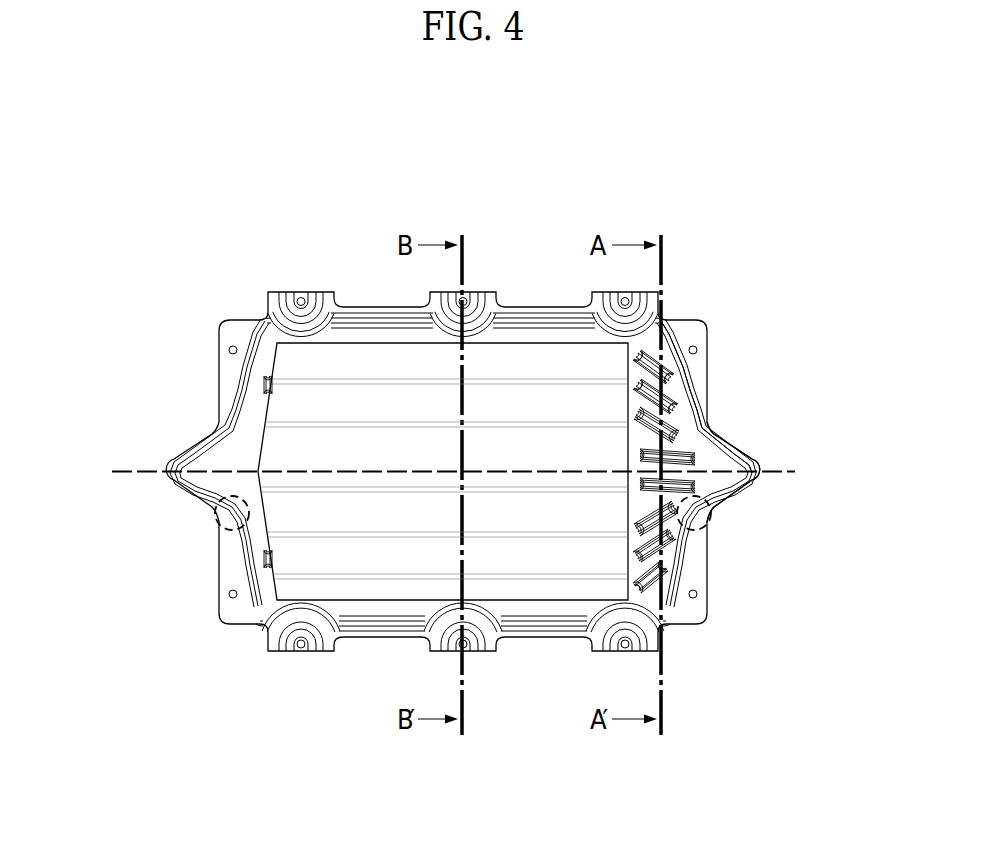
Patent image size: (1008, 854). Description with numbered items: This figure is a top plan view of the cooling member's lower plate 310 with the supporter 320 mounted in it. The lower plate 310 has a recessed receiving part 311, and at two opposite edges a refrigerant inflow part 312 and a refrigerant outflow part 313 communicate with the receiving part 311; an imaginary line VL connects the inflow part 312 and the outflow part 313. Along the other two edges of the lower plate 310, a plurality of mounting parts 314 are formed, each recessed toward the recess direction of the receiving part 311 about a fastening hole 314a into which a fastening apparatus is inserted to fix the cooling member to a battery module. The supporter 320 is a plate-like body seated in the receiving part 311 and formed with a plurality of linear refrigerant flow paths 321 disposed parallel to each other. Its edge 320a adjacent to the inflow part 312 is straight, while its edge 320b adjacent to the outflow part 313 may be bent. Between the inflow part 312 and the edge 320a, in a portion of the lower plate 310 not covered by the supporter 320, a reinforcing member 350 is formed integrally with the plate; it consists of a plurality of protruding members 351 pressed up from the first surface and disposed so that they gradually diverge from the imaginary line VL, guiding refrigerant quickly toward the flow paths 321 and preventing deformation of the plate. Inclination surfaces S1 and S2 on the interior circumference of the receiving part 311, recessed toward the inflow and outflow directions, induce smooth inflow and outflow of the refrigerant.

The lower plate 310 is at (685, 638).
The receiving part 311 is at (538, 610).
The refrigerant inflow part 312 is at (754, 461).
The refrigerant outflow part 313 is at (170, 468).
The mounting part 314 is at (430, 646).
The fastening hole 314a is at (466, 649).
The supporter 320 is at (367, 593).
The edge of the supporter adjacent to the refrigerant inflow part 320a is at (628, 374).
The edge of the supporter adjacent to the refrigerant outflow part 320b is at (270, 407).
The refrigerant flow path 321 is at (373, 443).
The reinforcing member 350 is at (704, 477).
The protruding member 351 is at (696, 462).
The inclination surface S1 is at (711, 528).
The inclination surface S2 is at (242, 528).
The imaginary line VL is at (122, 485).